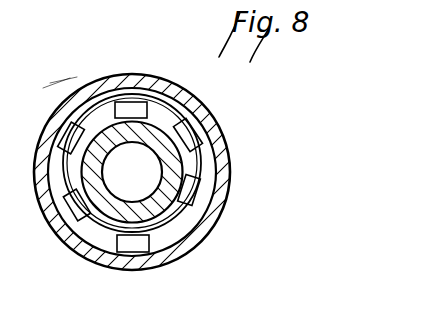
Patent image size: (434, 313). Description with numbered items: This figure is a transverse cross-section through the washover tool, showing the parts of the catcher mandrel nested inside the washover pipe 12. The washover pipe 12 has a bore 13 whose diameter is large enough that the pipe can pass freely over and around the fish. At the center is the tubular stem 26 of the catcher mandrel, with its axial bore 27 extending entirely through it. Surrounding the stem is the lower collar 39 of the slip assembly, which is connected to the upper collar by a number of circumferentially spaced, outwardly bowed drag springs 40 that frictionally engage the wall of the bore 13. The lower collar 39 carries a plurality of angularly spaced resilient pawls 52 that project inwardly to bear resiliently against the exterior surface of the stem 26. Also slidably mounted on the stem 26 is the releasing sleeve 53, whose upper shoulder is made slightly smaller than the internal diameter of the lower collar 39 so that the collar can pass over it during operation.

The washover pipe 12 is at (73, 97).
The bore 13 is at (120, 87).
The tubular stem 26 is at (152, 126).
The axial bore 27 is at (110, 147).
The lower collar 39 is at (167, 228).
The drag springs 40 is at (216, 108).
The pawls 52 is at (220, 213).
The releasing sleeve 53 is at (221, 152).